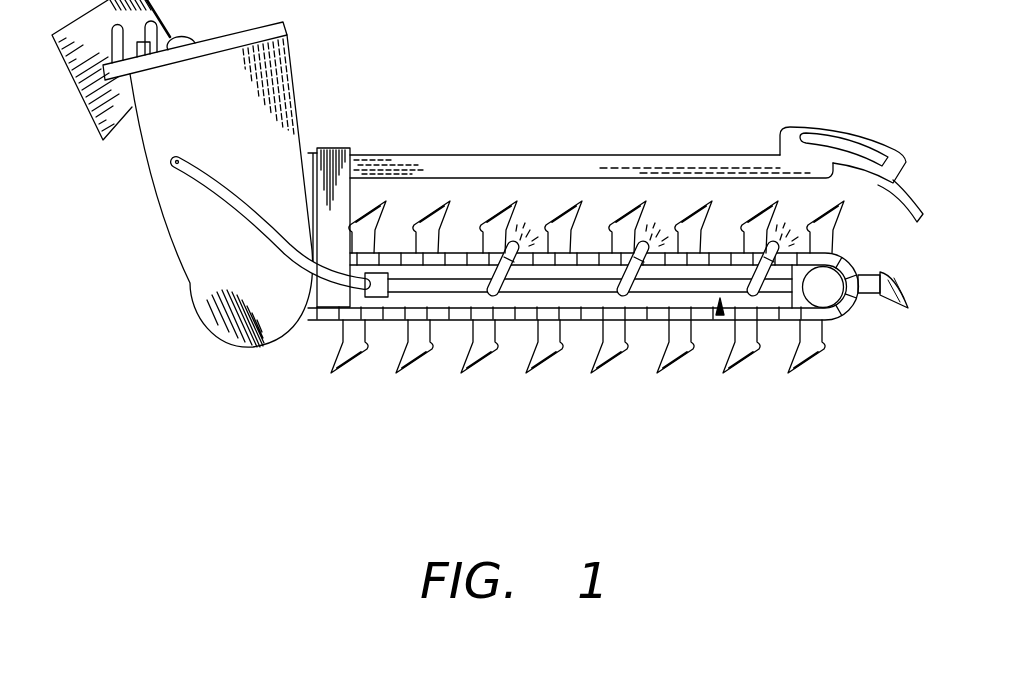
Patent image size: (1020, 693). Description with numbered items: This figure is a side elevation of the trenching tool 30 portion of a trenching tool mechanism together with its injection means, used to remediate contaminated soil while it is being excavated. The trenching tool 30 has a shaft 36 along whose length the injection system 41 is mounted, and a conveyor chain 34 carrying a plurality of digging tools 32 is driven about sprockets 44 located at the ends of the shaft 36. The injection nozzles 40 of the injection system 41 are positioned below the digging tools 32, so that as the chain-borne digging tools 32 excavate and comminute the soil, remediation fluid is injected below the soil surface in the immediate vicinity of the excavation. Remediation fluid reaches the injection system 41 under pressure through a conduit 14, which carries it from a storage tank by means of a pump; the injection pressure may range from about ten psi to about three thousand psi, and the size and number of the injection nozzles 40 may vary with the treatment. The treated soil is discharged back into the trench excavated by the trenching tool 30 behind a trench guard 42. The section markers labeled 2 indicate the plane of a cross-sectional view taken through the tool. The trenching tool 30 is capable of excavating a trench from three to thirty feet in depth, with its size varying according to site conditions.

The conduit 14 is at (247, 213).
The trenching tool 30 is at (472, 93).
The digging tools 32 is at (418, 360).
The conveyor chain 34 is at (785, 320).
The shaft 36 is at (587, 302).
The injection nozzles 40 is at (501, 274).
The injection system 41 is at (720, 315).
The trench guard 42 is at (396, 167).
The sprockets 44 is at (823, 290).
The section line for FIG. 2 is at (706, 105).